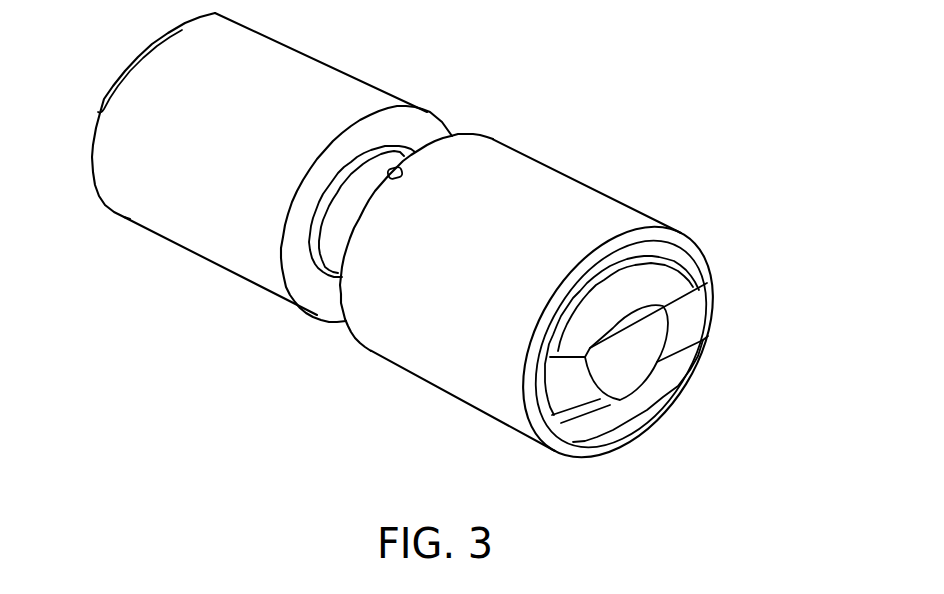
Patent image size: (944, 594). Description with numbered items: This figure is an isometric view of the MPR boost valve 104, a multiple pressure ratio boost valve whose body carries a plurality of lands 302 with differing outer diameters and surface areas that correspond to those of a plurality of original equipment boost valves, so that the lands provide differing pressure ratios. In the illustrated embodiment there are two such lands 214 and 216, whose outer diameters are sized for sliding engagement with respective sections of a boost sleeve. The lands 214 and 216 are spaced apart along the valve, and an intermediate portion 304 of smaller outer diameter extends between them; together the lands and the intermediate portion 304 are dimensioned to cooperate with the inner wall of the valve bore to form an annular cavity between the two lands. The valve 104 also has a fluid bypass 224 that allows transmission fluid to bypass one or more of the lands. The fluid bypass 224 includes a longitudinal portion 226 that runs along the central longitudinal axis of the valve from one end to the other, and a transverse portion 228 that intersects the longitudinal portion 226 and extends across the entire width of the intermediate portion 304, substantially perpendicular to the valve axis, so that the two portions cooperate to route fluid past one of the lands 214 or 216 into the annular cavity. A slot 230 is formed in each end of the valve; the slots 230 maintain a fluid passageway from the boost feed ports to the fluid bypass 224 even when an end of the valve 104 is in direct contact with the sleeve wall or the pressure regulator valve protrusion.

The MPR boost valve 104 is at (447, 257).
The land 214 is at (213, 146).
The land 216 is at (462, 276).
The fluid bypass 224 is at (633, 335).
The longitudinal portion 226 is at (595, 376).
The transverse portion 228 is at (397, 169).
The slot 230 is at (560, 388).
The lands 302 is at (447, 257).
The intermediate portion 304 is at (337, 253).